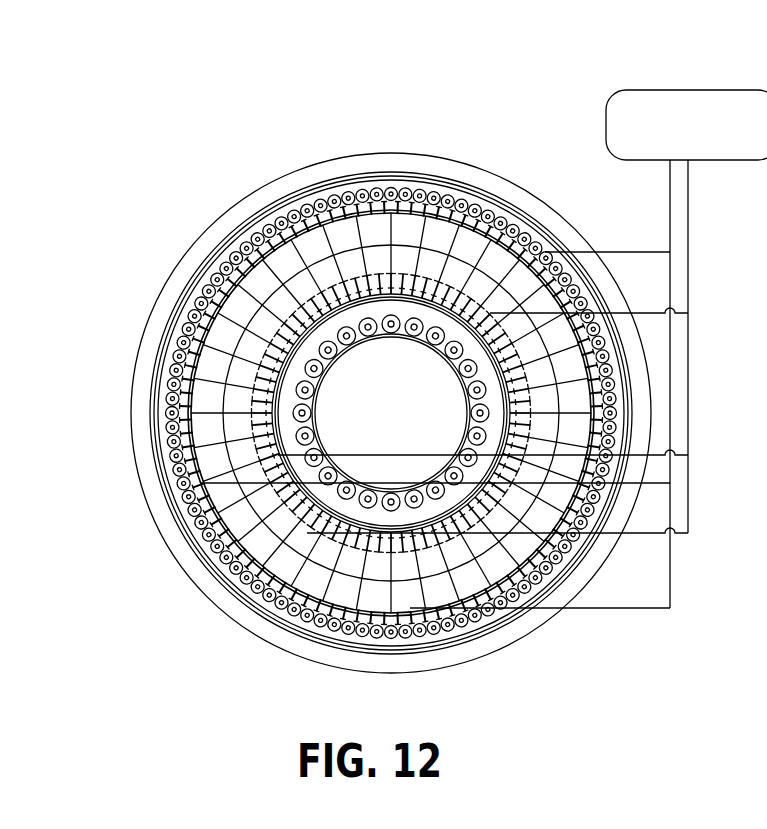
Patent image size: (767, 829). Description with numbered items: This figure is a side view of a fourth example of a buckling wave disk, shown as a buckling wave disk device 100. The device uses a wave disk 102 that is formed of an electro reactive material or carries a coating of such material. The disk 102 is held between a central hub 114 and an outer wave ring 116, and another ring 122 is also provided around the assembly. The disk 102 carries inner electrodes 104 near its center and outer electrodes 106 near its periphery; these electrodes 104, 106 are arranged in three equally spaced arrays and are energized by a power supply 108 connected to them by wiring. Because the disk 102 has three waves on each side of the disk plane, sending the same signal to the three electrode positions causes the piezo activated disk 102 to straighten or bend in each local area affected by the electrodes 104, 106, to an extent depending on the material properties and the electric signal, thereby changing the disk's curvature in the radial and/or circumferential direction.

The buckling wave disk device 100 is at (138, 197).
The wave disk 102 is at (230, 231).
The inner electrodes 104 is at (403, 278).
The outer electrodes 106 is at (350, 180).
The power supply 108 is at (634, 105).
The hub 114 is at (342, 508).
The wave ring 116 is at (172, 321).
The ring 122 is at (178, 268).